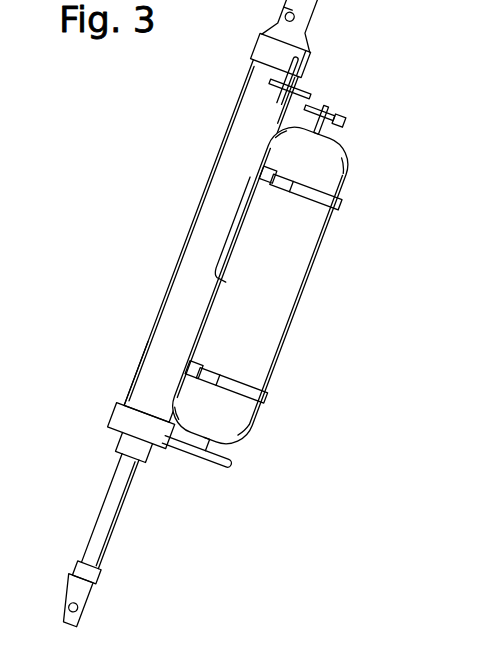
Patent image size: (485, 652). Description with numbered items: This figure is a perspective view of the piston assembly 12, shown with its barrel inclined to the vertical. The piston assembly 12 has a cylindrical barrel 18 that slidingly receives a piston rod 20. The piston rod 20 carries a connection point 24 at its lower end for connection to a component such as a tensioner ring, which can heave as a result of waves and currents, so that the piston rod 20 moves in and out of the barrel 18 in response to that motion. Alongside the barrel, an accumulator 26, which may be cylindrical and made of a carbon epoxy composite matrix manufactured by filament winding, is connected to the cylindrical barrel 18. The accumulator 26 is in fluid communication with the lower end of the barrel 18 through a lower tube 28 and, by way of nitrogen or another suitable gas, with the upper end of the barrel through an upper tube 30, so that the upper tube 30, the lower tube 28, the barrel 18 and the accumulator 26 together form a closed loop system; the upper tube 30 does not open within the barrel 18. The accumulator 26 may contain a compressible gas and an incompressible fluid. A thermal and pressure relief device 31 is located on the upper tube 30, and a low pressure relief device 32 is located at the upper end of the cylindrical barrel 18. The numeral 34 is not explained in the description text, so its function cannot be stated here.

The piston assembly 12 is at (140, 171).
The cylindrical barrel 18 is at (137, 367).
The piston rod 20 is at (112, 527).
The connection point 24 is at (85, 603).
The accumulator 26 is at (322, 290).
The lower tube 28 is at (231, 470).
The upper tube 30 is at (318, 94).
The thermal and pressure relief device 31 is at (344, 114).
The low pressure relief device 32 is at (240, 87).
The cylinder body 34 is at (153, 263).